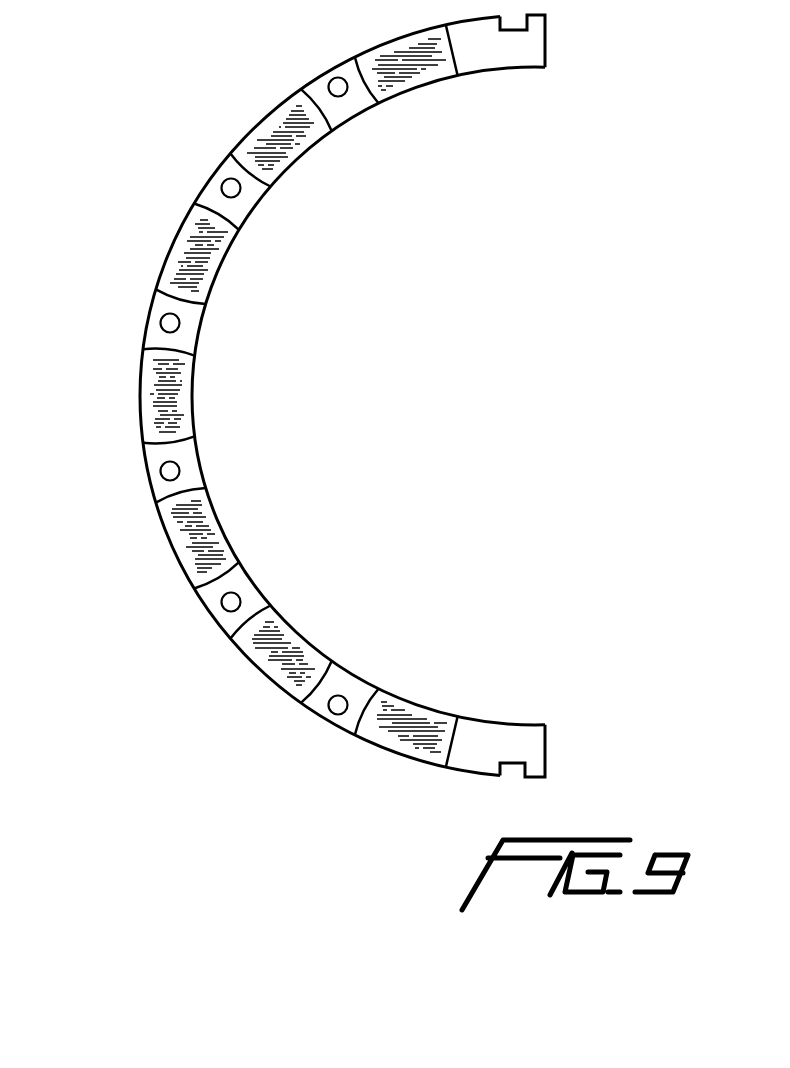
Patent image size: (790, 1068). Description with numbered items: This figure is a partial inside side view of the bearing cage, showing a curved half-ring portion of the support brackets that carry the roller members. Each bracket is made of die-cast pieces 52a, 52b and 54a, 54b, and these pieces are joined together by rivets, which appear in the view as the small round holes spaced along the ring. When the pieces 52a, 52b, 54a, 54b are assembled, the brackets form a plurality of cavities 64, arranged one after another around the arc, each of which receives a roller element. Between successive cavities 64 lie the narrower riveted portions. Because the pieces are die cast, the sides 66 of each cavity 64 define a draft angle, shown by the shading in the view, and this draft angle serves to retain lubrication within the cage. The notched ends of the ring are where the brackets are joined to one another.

The bracket piece 52a is at (273, 106).
The bracket piece 52b is at (307, 396).
The bracket piece 54a is at (522, 41).
The bracket piece 54b is at (522, 751).
The cavity 64 is at (197, 407).
The side 66 is at (166, 516).